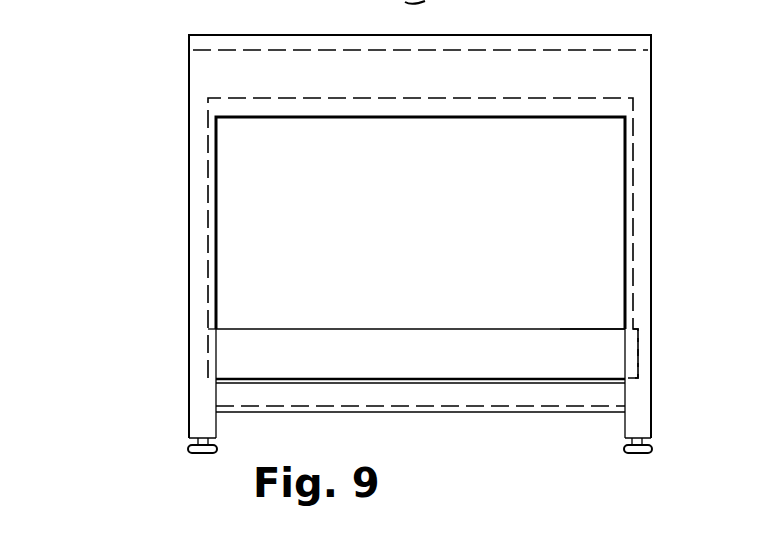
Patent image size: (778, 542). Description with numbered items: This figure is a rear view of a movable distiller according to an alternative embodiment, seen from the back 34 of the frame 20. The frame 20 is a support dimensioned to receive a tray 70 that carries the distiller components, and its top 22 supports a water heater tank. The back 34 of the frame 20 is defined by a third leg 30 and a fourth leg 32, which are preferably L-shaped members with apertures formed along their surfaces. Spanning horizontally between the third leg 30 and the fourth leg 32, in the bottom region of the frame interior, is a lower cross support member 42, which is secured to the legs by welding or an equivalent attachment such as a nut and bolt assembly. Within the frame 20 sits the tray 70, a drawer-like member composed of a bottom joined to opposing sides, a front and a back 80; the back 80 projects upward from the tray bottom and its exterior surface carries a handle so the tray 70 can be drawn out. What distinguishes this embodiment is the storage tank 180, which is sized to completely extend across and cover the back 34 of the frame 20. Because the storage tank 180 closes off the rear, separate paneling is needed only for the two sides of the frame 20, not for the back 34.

The frame 20 is at (198, 90).
The top 22 is at (370, 43).
The storage tank 180 is at (275, 180).
The back 34 is at (229, 243).
The back 80 is at (252, 357).
The tray 70 is at (577, 347).
The third leg 30 is at (640, 320).
The fourth leg 32 is at (202, 423).
The lower cross support member 42 is at (462, 400).